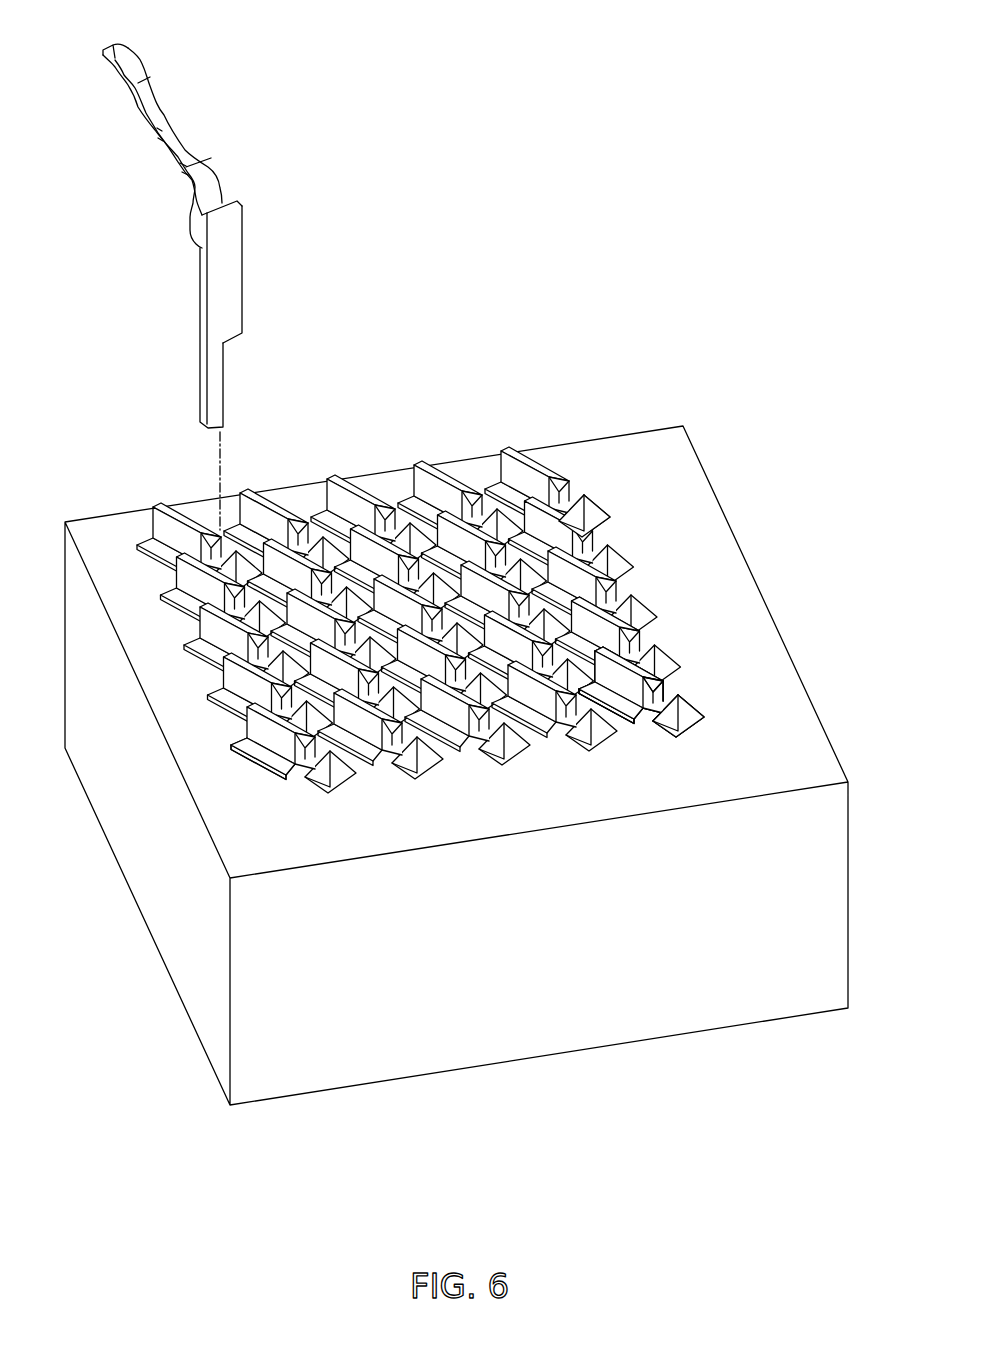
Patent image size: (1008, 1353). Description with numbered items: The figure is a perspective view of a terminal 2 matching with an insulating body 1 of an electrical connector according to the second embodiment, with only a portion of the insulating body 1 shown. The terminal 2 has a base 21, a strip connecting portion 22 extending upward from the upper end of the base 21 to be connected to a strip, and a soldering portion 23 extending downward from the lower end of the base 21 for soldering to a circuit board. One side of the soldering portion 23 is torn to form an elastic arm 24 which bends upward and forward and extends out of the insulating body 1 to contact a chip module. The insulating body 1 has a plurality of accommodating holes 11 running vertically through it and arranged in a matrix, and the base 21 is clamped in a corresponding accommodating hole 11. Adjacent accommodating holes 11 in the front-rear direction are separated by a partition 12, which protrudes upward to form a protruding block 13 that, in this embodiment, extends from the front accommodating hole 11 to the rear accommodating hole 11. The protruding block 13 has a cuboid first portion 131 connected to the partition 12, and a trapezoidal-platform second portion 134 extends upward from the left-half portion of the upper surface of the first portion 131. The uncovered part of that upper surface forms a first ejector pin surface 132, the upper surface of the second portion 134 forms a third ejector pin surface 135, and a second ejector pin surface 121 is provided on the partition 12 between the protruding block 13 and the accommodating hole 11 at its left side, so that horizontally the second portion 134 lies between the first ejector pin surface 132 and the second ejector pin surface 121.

The insulating body 1 is at (706, 469).
The accommodating hole 11 is at (583, 507).
The partition 12 is at (637, 700).
The second ejector pin surface 121 is at (627, 713).
The protruding block 13 is at (817, 550).
The first portion 131 is at (657, 690).
The first ejector pin surface 132 is at (630, 607).
The second portion 134 is at (663, 683).
The third ejector pin surface 135 is at (643, 663).
The terminal 2 is at (201, 266).
The base 21 is at (235, 253).
The strip connecting portion 22 is at (226, 203).
The soldering portion 23 is at (215, 392).
The elastic arm 24 is at (133, 62).